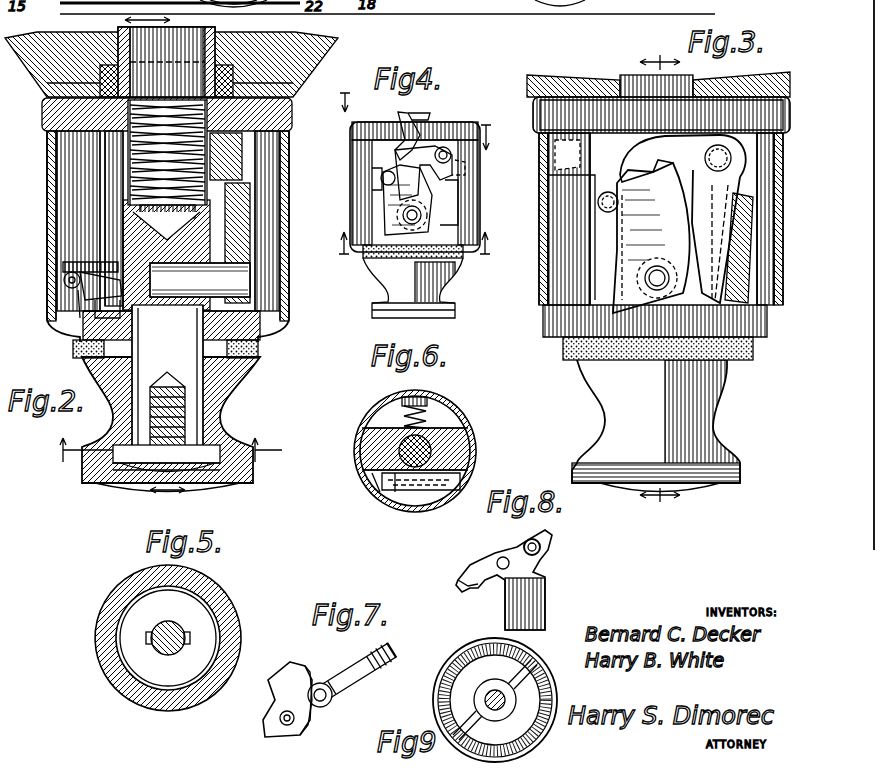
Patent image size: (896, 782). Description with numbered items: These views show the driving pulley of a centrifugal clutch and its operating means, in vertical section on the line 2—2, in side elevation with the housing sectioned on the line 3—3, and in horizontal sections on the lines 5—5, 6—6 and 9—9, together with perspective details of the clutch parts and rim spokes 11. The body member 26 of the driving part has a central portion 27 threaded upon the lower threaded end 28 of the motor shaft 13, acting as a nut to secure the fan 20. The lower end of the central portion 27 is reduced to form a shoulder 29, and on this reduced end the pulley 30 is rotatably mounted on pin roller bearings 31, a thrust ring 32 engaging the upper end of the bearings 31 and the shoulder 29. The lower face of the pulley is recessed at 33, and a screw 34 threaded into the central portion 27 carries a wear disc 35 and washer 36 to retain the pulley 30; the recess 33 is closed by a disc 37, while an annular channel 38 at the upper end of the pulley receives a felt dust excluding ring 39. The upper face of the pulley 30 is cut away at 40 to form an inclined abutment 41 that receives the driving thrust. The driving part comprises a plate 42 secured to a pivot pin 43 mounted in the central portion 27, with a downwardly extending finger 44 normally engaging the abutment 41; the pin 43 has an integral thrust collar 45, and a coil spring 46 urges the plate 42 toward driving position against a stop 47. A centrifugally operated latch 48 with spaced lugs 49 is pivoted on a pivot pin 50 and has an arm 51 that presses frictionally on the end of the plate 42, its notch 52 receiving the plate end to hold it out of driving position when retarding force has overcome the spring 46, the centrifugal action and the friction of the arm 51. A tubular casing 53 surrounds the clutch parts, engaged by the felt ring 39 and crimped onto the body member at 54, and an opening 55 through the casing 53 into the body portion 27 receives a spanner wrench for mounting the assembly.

In FIG. 3, the section line 2— 2 is at (660, 279).
In FIG. 2, the section line 3— 3 is at (155, 256).
In FIG. 2, the section line 5— 5 is at (166, 447).
In FIG. 4, the section line 6— 6 is at (417, 120).
In FIG. 4, the section line 9— 9 is at (414, 242).
In FIG. 9, the wheel rim spokes 11 is at (448, 700).
In FIG. 2, the motor shaft 13 is at (296, 80).
In FIG. 2, the fan 20 is at (300, 40).
In FIG. 2, the body member 26 is at (293, 113).
In FIG. 6, the body member 26 is at (362, 446).
In FIG. 2, the central portion 27 is at (200, 242).
In FIG. 6, the central portion 27 is at (415, 451).
In FIG. 9, the central portion 27 is at (490, 698).
In FIG. 2, the lower threaded end 28 is at (232, 182).
In FIG. 2, the shoulder 29 is at (272, 313).
In FIG. 2, the pulley 30 is at (232, 402).
In FIG. 4, the pulley 30 is at (441, 283).
In FIG. 3, the pulley 30 is at (612, 393).
In FIG. 5, the pulley 30 is at (226, 612).
In FIG. 2, the pin roller bearings 31 is at (226, 420).
In FIG. 2, the thrust ring 32 is at (265, 341).
In FIG. 2, the recess 33 is at (226, 480).
In FIG. 2, the screw 34 is at (152, 477).
In FIG. 5, the screw 34 is at (160, 645).
In FIG. 2, the wear disc 35 is at (142, 456).
In FIG. 5, the wear disc 35 is at (140, 612).
In FIG. 2, the washer 36 is at (92, 462).
In FIG. 2, the disc 37 is at (212, 472).
In FIG. 2, the annular channel 38 is at (249, 380).
In FIG. 2, the dust excluding ring 39 is at (84, 376).
In FIG. 3, the dust excluding ring 39 is at (740, 376).
In FIG. 3, the cut-away 40 is at (566, 312).
In FIG. 9, the cut-away 40 is at (484, 670).
In FIG. 4, the abutment 41 is at (370, 244).
In FIG. 3, the abutment 41 is at (600, 340).
In FIG. 7, the abutment 41 is at (270, 735).
In FIG. 4, the plate 42 is at (406, 196).
In FIG. 3, the plate 42 is at (622, 240).
In FIG. 6, the plate 42 is at (430, 492).
In FIG. 7, the plate 42 is at (276, 700).
In FIG. 4, the pivot pin 43 is at (428, 215).
In FIG. 3, the pivot pin 43 is at (640, 280).
In FIG. 7, the pivot pin 43 is at (360, 682).
In FIG. 4, the finger 44 is at (364, 250).
In FIG. 3, the finger 44 is at (568, 340).
In FIG. 7, the thrust collar 45 is at (340, 685).
In FIG. 2, the coil spring 46 is at (62, 320).
In FIG. 6, the coil spring 46 is at (440, 400).
In FIG. 7, the coil spring 46 is at (378, 660).
In FIG. 4, the stop 47 is at (381, 178).
In FIG. 3, the stop 47 is at (600, 206).
In FIG. 6, the stop 47 is at (386, 490).
In FIG. 3, the centrifugally operated latch 48 is at (688, 305).
In FIG. 8, the centrifugally operated latch 48 is at (548, 586).
In FIG. 3, the spaced lugs 49 is at (722, 142).
In FIG. 8, the spaced lugs 49 is at (542, 543).
In FIG. 4, the pivot pin 50 is at (470, 162).
In FIG. 3, the pivot pin 50 is at (571, 220).
In FIG. 4, the arm 51 is at (440, 146).
In FIG. 8, the arm 51 is at (487, 558).
In FIG. 4, the notch 52 is at (398, 148).
In FIG. 3, the notch 52 is at (645, 170).
In FIG. 8, the notch 52 is at (480, 590).
In FIG. 3, the tubular casing 53 is at (783, 333).
In FIG. 9, the tubular casing 53 is at (535, 674).
In FIG. 3, the crimped upper end 54 is at (540, 100).
In FIG. 4, the opening 55 is at (362, 155).
In FIG. 3, the opening 55 is at (544, 150).